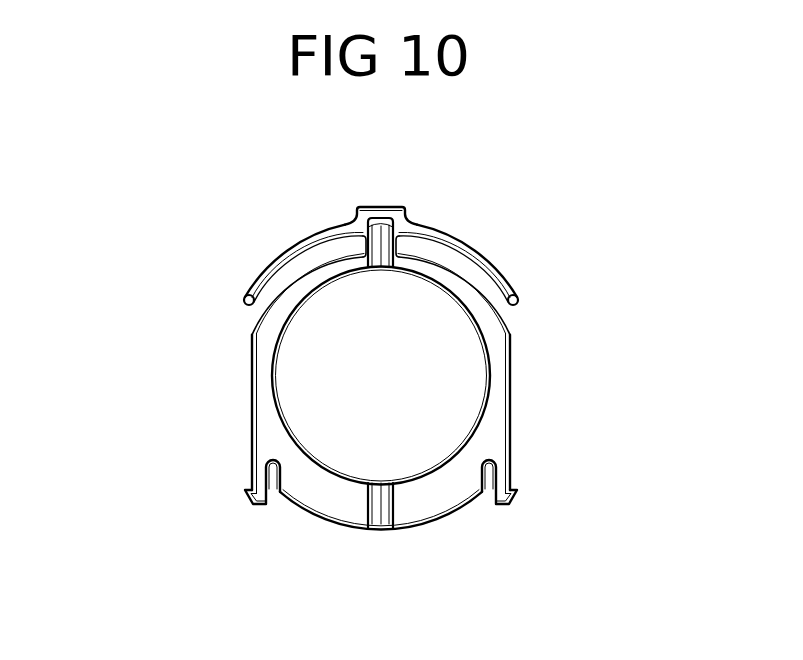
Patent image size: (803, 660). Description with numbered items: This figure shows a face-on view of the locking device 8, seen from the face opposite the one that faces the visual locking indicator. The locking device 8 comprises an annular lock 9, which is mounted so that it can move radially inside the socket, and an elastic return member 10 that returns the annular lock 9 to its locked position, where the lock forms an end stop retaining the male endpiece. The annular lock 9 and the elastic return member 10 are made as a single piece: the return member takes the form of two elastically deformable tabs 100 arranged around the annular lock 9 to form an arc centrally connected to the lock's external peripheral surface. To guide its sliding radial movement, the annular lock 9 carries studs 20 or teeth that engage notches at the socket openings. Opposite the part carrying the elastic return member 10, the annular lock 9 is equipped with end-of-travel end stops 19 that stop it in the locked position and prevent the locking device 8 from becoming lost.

The locking device 8 is at (221, 393).
The elastic return member 10 is at (447, 230).
The elastically deformable tabs 100 is at (493, 273).
The annular lock 9 is at (497, 390).
The end-of-travel end stop 19 is at (517, 492).
The studs 20 is at (381, 232).